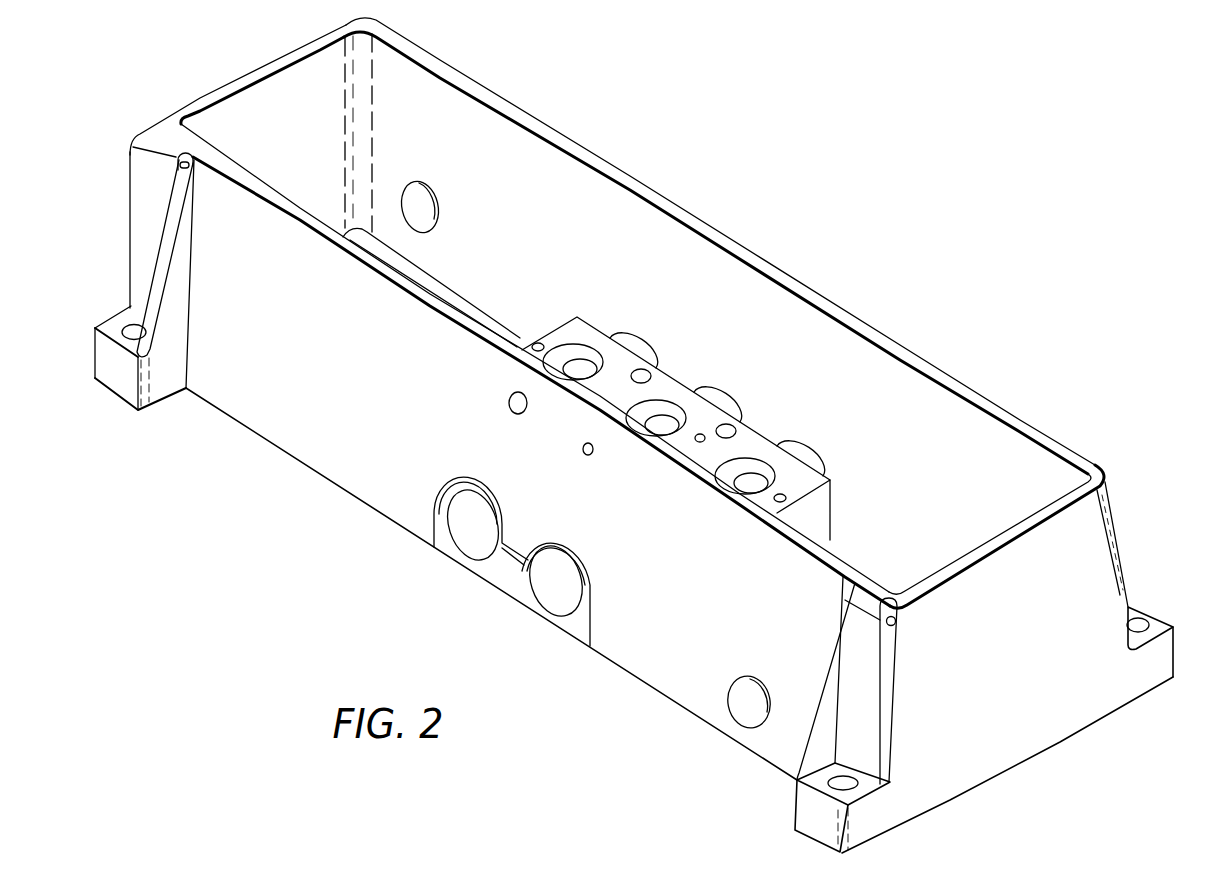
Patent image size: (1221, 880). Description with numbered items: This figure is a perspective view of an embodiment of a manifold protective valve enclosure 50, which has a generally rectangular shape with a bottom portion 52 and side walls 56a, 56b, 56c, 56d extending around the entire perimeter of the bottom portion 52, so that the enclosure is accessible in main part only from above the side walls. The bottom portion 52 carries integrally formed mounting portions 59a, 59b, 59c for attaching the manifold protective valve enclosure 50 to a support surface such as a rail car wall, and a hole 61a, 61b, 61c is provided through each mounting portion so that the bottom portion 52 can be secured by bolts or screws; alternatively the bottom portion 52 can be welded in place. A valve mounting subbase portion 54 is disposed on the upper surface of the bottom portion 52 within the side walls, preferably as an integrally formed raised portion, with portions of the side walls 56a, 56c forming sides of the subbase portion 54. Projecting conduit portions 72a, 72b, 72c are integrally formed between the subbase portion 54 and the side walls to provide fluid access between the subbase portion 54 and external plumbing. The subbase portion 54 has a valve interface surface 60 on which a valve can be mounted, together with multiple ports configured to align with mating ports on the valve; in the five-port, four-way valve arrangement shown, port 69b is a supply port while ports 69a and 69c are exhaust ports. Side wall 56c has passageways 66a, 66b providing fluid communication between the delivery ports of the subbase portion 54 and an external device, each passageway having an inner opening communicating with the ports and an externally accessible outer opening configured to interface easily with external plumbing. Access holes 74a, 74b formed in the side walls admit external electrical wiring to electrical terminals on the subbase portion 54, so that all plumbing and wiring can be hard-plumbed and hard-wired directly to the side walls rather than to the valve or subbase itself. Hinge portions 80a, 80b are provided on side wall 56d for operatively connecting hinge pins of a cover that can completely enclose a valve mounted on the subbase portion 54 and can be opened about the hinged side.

The manifold protective valve enclosure 50 is at (783, 123).
The bottom portion 52 is at (937, 802).
The valve mounting subbase portion 54 is at (815, 513).
The side wall 56a is at (732, 244).
The side wall 56b is at (1010, 688).
The side wall 56c is at (352, 469).
The side wall 56d is at (252, 79).
The mounting portion 59a is at (135, 393).
The mounting portion 59b is at (818, 820).
The mounting portion 59c is at (1154, 675).
The valve interface surface 60 is at (570, 336).
The hole 61a is at (146, 330).
The hole 61b is at (845, 783).
The hole 61c is at (1140, 624).
The passageway 66a is at (467, 522).
The passageway 66b is at (558, 582).
The exhaust port 69a is at (583, 370).
The supply port 69b is at (665, 424).
The exhaust port 69c is at (749, 480).
The projecting conduit portion 72a is at (634, 342).
The projecting conduit portion 72b is at (720, 397).
The projecting conduit portion 72c is at (804, 452).
The access hole 74a is at (405, 212).
The access hole 74b is at (745, 706).
The hinge portion 80a is at (168, 145).
The hinge portion 80b is at (902, 603).